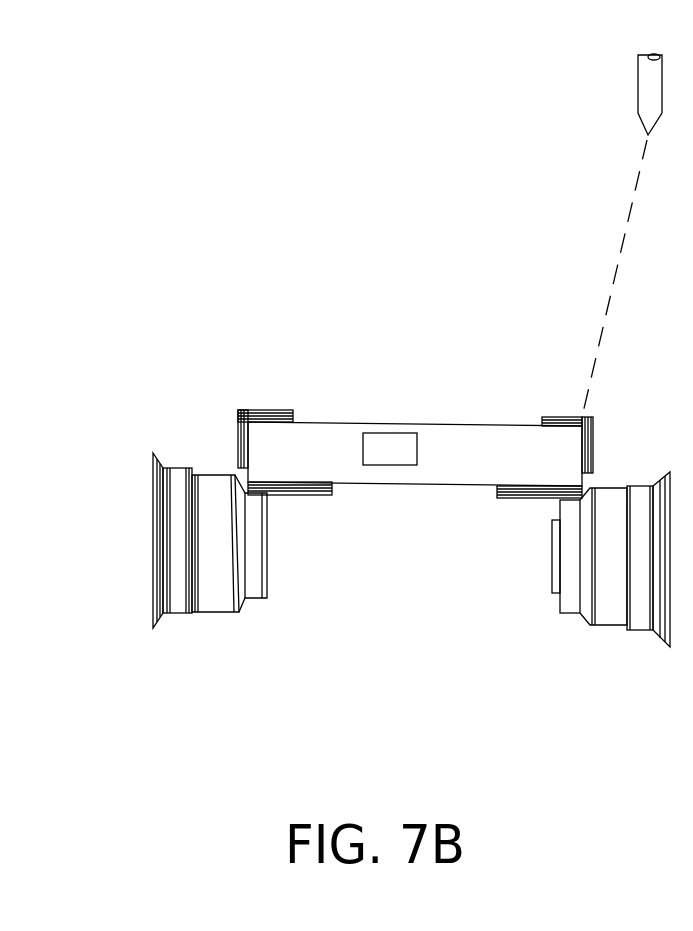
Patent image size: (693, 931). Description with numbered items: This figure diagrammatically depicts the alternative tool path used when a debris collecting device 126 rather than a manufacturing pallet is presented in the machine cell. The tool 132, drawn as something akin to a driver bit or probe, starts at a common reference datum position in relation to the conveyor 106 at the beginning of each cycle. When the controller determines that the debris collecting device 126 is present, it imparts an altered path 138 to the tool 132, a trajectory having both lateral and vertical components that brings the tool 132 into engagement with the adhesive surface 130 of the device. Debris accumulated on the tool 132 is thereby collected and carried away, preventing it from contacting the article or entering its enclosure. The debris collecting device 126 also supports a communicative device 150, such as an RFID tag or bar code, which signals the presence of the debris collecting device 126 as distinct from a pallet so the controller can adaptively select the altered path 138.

The conveyor 106 is at (140, 443).
The debris collecting device 126 is at (388, 483).
The adhesive surface 130 is at (285, 410).
The tool 132 is at (638, 95).
The altered path 138 is at (613, 278).
The communicative device 150 is at (400, 433).